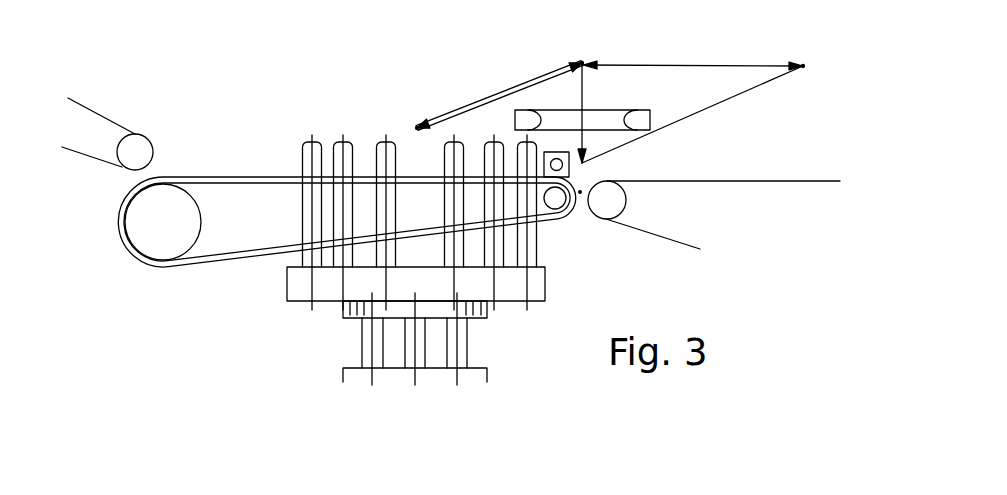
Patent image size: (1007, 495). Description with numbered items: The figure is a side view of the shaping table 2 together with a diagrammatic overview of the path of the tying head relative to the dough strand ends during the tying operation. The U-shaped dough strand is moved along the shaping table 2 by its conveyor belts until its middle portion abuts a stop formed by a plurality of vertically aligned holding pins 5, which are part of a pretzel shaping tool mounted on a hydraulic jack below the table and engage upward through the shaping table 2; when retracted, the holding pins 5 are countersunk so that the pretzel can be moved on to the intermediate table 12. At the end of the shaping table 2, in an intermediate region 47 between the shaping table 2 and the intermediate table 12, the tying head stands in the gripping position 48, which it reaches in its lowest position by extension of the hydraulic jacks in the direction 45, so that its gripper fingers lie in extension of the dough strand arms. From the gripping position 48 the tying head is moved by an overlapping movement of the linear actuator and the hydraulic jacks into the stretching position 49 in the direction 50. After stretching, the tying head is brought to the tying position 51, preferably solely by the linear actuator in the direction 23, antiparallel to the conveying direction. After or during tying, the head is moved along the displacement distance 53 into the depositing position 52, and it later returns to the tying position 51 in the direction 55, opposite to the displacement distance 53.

The shaping table 2 is at (237, 172).
The holding pins 5 is at (343, 155).
The intermediate table 12 is at (805, 173).
The direction 23 is at (692, 52).
The direction 45 is at (597, 114).
The intermediate region 47 is at (583, 208).
The gripping position 48 is at (585, 164).
The stretching position 49 is at (806, 64).
The direction 50 is at (692, 114).
The tying position 51 is at (582, 63).
The depositing position 52 is at (417, 128).
The displacement distance 53 is at (499, 96).
The direction 55 is at (563, 125).